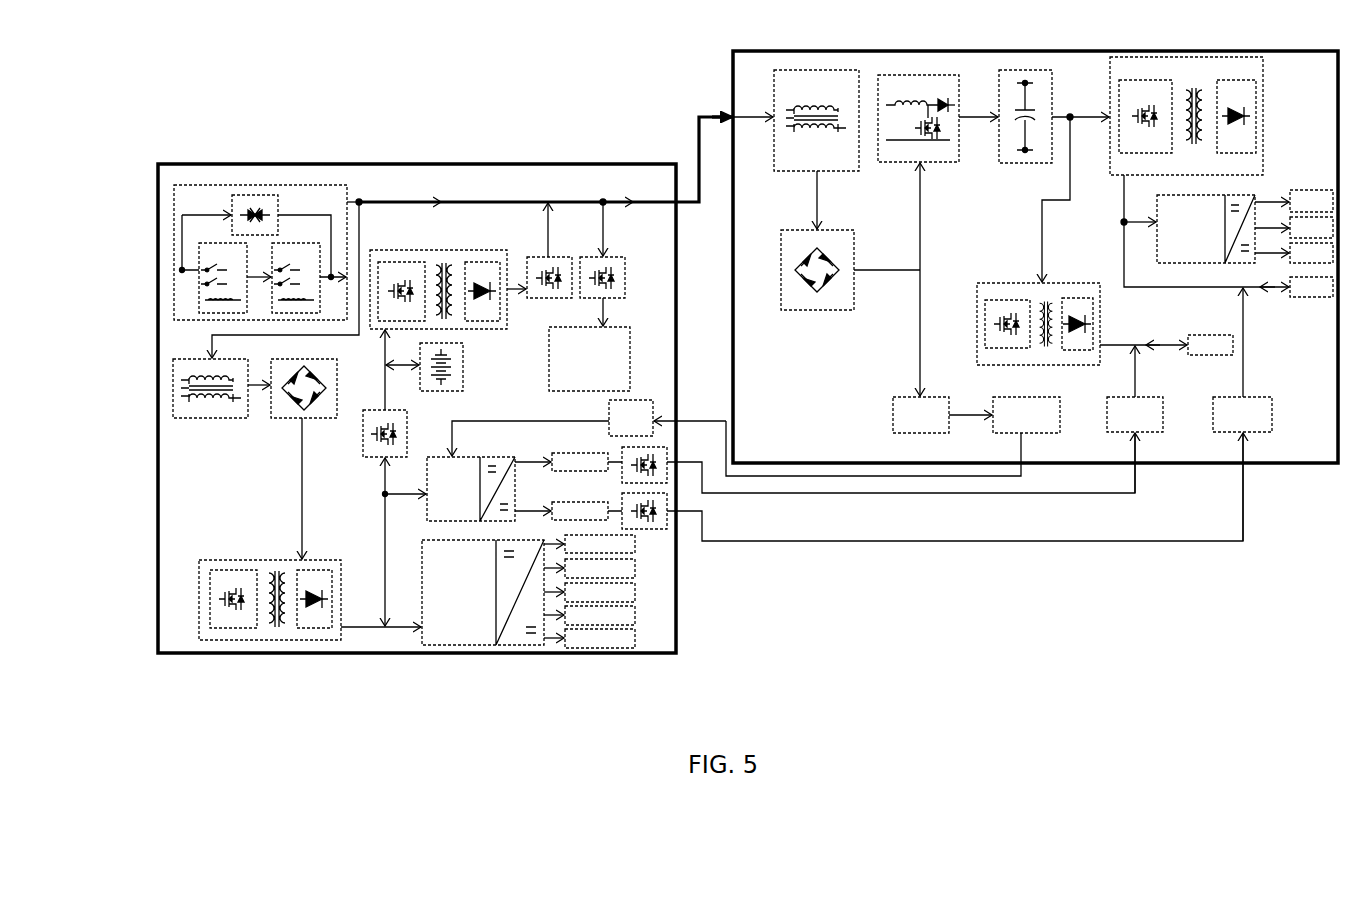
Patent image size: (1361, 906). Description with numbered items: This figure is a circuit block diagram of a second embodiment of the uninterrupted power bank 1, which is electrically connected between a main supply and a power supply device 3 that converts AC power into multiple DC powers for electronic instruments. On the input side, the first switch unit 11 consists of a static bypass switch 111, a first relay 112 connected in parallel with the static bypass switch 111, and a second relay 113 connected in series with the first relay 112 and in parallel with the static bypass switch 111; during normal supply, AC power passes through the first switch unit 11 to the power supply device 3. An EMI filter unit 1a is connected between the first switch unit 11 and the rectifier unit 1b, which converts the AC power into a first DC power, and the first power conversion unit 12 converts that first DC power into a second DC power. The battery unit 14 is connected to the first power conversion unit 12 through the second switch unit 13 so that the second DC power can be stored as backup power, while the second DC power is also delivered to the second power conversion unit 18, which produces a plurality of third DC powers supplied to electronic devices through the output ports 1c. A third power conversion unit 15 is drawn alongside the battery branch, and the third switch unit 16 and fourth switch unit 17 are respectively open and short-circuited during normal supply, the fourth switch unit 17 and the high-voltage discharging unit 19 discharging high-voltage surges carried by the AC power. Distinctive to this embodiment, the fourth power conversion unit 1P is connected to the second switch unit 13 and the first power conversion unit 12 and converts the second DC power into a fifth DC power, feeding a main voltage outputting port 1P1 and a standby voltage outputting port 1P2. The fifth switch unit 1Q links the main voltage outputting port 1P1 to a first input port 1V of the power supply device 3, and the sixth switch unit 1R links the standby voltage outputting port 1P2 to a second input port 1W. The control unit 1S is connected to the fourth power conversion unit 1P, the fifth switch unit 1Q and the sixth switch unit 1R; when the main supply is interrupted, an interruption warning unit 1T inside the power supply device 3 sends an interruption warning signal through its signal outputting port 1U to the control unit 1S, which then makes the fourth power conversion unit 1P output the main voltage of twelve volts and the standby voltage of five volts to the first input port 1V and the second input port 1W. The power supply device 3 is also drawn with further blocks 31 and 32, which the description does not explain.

The uninterrupted power bank 1 is at (630, 164).
The power supply device 3 is at (733, 72).
The first switch unit 11 is at (338, 184).
The static bypass switch 111 is at (255, 195).
The first relay 112 is at (203, 243).
The second relay 113 is at (313, 243).
The first power conversion unit 12 is at (199, 636).
The second switch unit 13 is at (408, 430).
The battery unit 14 is at (464, 367).
The third power conversion unit 15 is at (436, 256).
The third switch unit 16 is at (531, 259).
The fourth switch unit 17 is at (620, 259).
The second power conversion unit 18 is at (420, 646).
The high-voltage discharging unit 19 is at (626, 328).
The EMI filter unit 1a is at (212, 419).
The rectifier unit 1b is at (338, 406).
The output ports 1c is at (574, 641).
The fourth power conversion unit 1P is at (426, 518).
The main voltage outputting port 1P1 is at (598, 502).
The standby voltage outputting port 1P2 is at (572, 452).
The fifth switch unit 1Q is at (662, 530).
The sixth switch unit 1R is at (660, 447).
The control unit 1S is at (632, 401).
The interruption warning unit 1T is at (893, 397).
The signal outputting port 1U is at (995, 397).
The first input port 1V is at (1264, 397).
The second input port 1W is at (1106, 405).
The communication terminal 31 is at (1300, 298).
The signal unit 32 is at (1212, 356).